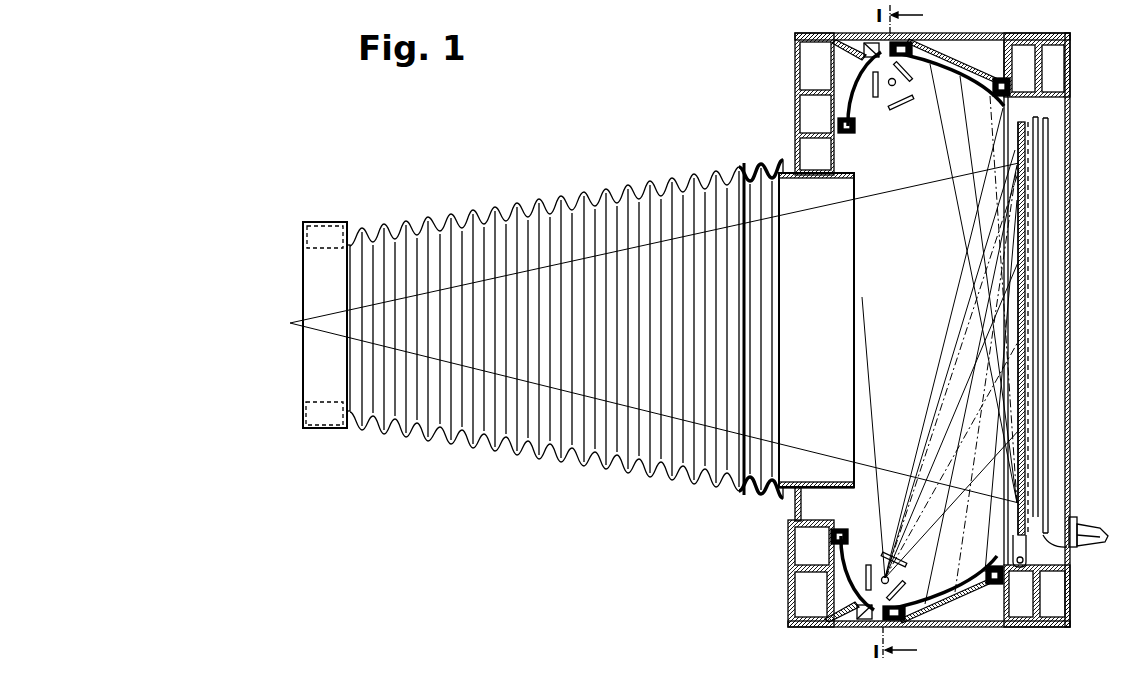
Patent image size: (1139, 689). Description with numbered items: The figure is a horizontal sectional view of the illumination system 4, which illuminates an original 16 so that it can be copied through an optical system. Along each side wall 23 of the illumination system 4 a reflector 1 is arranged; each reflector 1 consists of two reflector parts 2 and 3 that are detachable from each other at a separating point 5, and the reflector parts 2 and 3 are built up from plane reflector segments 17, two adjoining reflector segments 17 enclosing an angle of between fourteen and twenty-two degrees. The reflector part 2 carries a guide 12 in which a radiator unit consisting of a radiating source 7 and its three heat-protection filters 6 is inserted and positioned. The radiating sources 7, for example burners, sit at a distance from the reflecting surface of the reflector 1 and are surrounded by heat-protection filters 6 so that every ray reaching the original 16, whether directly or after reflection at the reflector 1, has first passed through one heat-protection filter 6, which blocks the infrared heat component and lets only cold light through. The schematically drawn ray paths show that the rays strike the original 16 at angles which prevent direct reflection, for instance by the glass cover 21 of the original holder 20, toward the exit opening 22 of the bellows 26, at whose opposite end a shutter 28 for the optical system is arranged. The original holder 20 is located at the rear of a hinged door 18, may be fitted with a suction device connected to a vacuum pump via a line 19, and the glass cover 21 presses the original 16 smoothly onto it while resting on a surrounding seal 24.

The reflector 1 is at (963, 72).
The reflector part 2 is at (860, 67).
The reflector part 3 is at (947, 57).
The illumination system 4 is at (989, 33).
The separating point 5 is at (908, 41).
The heat-protection filter 6 is at (909, 74).
The radiating source 7 is at (897, 84).
The guide 12 is at (872, 43).
The original 16 is at (1028, 278).
The reflector segment 17 is at (995, 95).
The hinged door 18 is at (1071, 365).
The line 19 is at (1087, 530).
The original holder 20 is at (1029, 408).
The glass cover 21 is at (1022, 430).
The exit opening 22 is at (843, 228).
The side wall 23 is at (836, 40).
The surrounding seal 24 is at (1024, 130).
The bellows 26 is at (455, 225).
The shutter 28 is at (328, 235).